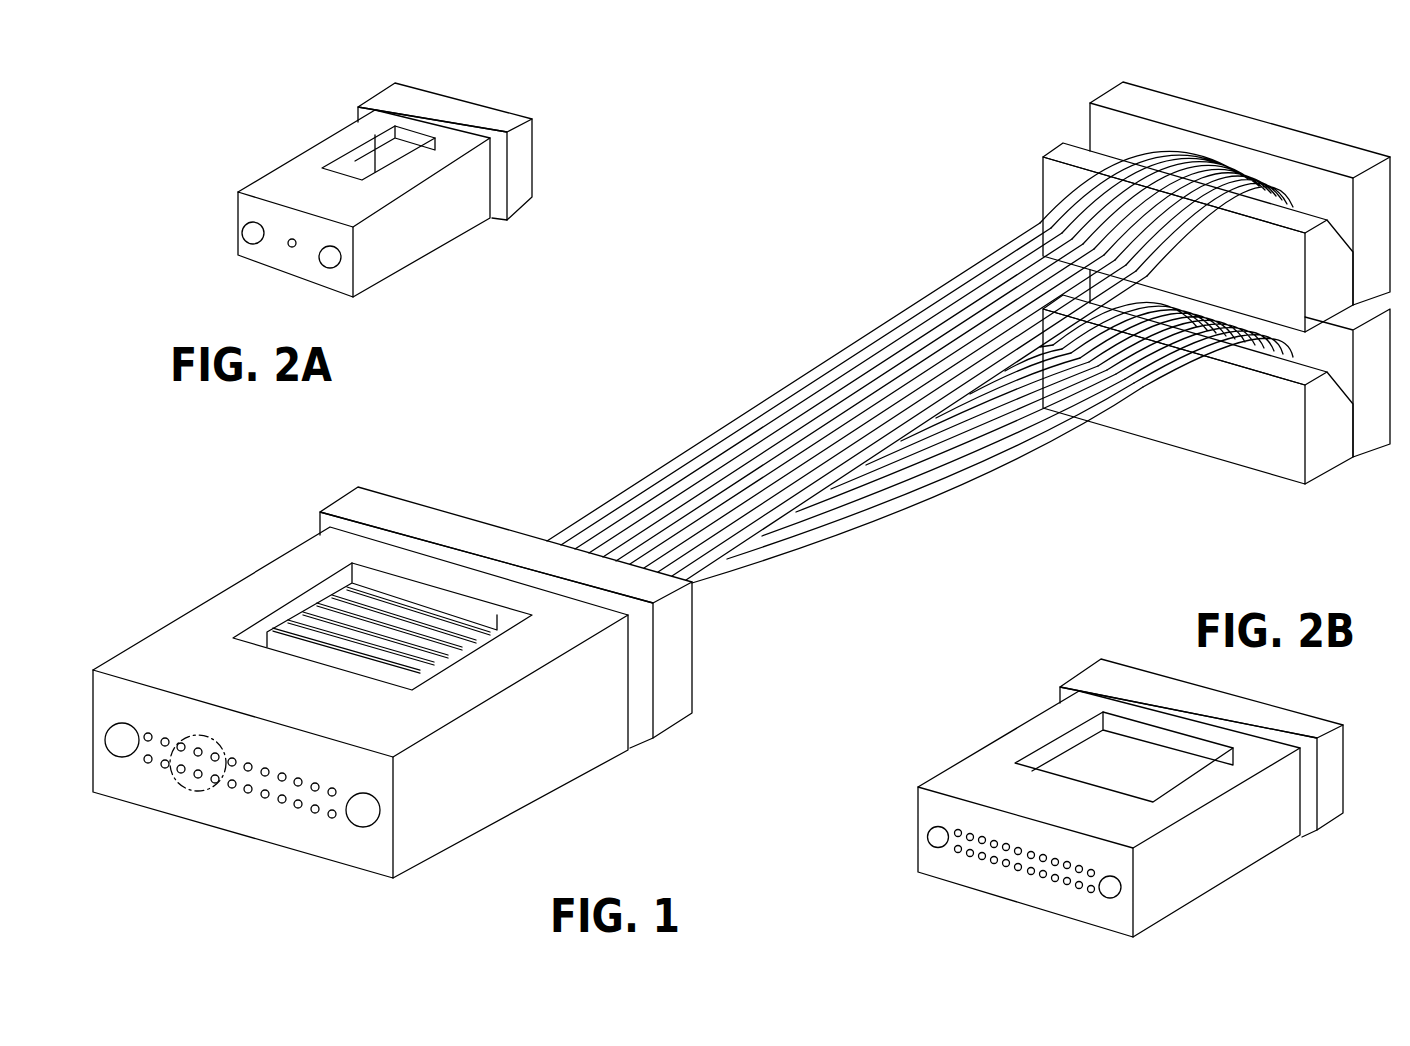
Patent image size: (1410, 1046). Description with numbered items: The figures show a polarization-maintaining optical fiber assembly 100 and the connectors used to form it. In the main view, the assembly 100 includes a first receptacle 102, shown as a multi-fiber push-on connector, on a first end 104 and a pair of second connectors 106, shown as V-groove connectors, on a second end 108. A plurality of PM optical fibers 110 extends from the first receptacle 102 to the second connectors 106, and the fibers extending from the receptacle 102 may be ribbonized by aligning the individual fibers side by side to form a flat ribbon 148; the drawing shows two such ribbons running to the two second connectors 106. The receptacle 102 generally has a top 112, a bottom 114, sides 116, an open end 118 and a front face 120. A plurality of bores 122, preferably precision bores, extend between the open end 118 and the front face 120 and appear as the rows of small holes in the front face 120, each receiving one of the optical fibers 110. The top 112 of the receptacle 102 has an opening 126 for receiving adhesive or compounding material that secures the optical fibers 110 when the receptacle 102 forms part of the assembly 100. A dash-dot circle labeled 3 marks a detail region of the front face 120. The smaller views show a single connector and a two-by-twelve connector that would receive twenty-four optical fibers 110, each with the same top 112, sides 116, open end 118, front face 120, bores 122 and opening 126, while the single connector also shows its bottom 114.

In FIG. 1, the polarization-maintaining optical fiber assembly 100 is at (578, 462).
In FIG. 1, the first receptacle 102 is at (435, 825).
In FIG. 2A, the first receptacle 102 is at (525, 168).
In FIG. 2B, the first receptacle 102 is at (1330, 810).
In FIG. 1, the first end 104 is at (222, 813).
In FIG. 1, the second connectors 106 is at (1120, 98).
In FIG. 1, the second end 108 is at (1197, 167).
In FIG. 1, the PM optical fibers 110 is at (1045, 205).
In FIG. 1, the top 112 is at (212, 630).
In FIG. 2A, the top 112 is at (290, 175).
In FIG. 2B, the top 112 is at (982, 775).
In FIG. 1, the bottom 114 is at (508, 800).
In FIG. 2A, the bottom 114 is at (382, 275).
In FIG. 1, the sides 116 is at (498, 777).
In FIG. 2A, the sides 116 is at (385, 240).
In FIG. 2B, the sides 116 is at (1174, 865).
In FIG. 1, the open end 118 is at (478, 512).
In FIG. 2A, the open end 118 is at (490, 97).
In FIG. 2B, the open end 118 is at (1290, 708).
In FIG. 1, the front face 120 is at (348, 845).
In FIG. 2A, the front face 120 is at (250, 253).
In FIG. 2B, the front face 120 is at (1097, 912).
In FIG. 1, the bores 122 is at (298, 805).
In FIG. 2A, the bores 122 is at (290, 248).
In FIG. 2B, the bores 122 is at (1018, 868).
In FIG. 1, the opening 126 is at (340, 605).
In FIG. 2A, the opening 126 is at (372, 150).
In FIG. 2B, the opening 126 is at (1115, 760).
In FIG. 1, the flat ribbon 148 is at (826, 387).
In FIG. 1, the detail region of FIG. 3 is at (198, 800).